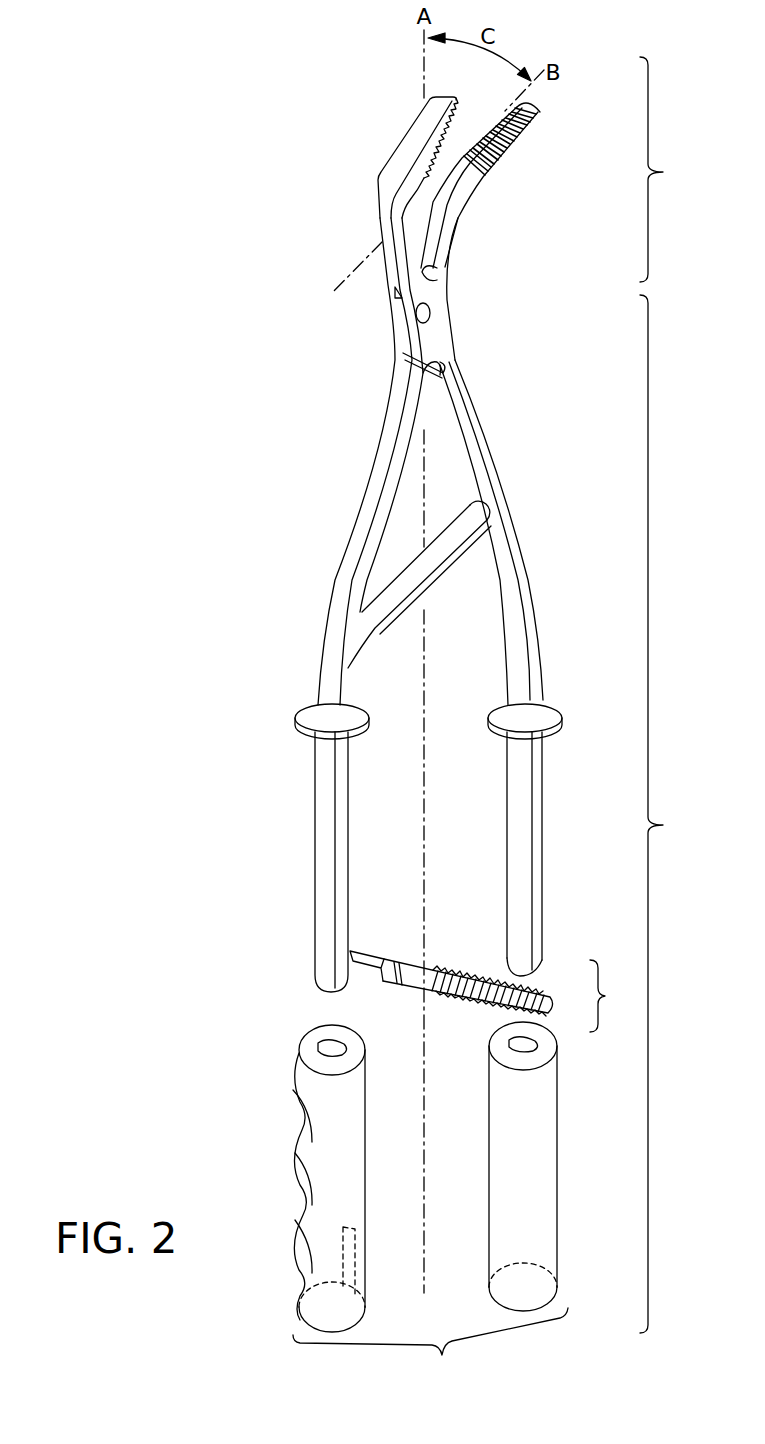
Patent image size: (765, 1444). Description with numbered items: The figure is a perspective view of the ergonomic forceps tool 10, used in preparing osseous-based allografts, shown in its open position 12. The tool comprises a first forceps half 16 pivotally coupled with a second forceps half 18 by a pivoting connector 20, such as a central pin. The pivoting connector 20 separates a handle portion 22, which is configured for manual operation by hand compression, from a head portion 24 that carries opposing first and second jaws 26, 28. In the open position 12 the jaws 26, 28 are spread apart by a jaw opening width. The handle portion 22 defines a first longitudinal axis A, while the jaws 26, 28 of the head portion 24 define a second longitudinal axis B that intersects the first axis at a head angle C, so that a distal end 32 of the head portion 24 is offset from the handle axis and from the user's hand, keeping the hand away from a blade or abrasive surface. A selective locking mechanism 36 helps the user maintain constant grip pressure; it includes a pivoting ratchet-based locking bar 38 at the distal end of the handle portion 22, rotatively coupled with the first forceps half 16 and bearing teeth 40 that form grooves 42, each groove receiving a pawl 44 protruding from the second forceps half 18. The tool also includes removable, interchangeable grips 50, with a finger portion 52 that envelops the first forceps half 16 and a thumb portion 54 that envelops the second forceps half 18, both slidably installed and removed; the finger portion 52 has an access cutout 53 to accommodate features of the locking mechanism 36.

The ergonomic forceps tool 10 is at (280, 395).
The open position 12 is at (560, 96).
The first forceps half 16 is at (322, 697).
The second forceps half 18 is at (537, 685).
The pivoting connector 20 is at (431, 313).
The handle portion 22 is at (668, 814).
The head portion 24 is at (668, 169).
The first jaw 26 is at (457, 185).
The second jaw 28 is at (407, 157).
The distal end of the head portion 32 is at (540, 112).
The selective locking mechanism 36 is at (494, 982).
The ratchet-based locking bar 38 is at (408, 981).
The teeth or ridges 40 is at (447, 975).
The grooves 42 is at (465, 984).
The pawl 44 is at (530, 975).
The grips 50 is at (430, 1346).
The finger portion 52 is at (293, 1092).
The access cutout 53 is at (357, 1268).
The thumb portion 54 is at (547, 1120).